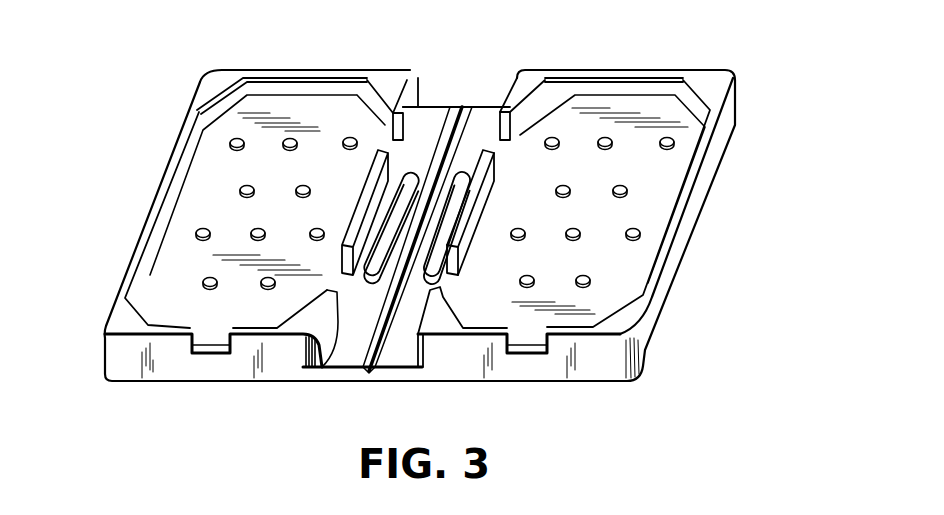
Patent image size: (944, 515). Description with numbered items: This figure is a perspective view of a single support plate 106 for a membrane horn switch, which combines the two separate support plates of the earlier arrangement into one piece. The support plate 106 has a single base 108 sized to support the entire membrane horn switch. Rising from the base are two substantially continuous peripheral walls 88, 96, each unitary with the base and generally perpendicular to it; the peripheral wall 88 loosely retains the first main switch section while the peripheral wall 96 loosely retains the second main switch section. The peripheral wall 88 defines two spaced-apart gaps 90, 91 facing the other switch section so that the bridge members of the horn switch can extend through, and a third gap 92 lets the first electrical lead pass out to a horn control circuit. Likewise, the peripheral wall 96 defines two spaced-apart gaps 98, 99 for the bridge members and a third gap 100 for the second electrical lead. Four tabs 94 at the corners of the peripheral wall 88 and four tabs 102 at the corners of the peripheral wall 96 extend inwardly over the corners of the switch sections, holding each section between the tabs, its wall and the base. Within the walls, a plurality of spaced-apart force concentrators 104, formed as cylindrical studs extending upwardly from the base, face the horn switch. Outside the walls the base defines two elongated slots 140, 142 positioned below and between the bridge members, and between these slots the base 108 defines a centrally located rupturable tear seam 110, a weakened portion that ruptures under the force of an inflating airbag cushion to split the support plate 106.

The peripheral wall 88 is at (372, 180).
The gap 90 is at (392, 130).
The gap 91 is at (328, 292).
The third gap 92 is at (205, 354).
The tabs 94 is at (210, 90).
The peripheral wall 96 is at (490, 193).
The gap 98 is at (496, 160).
The gap 99 is at (455, 275).
The third gap 100 is at (530, 346).
The tabs 102 is at (532, 76).
The force concentrators 104 is at (236, 148).
The support plate 106 is at (288, 47).
The base 108 is at (335, 381).
The tear seam 110 is at (468, 110).
The elongated slot 140 is at (407, 172).
The elongated slot 142 is at (473, 176).